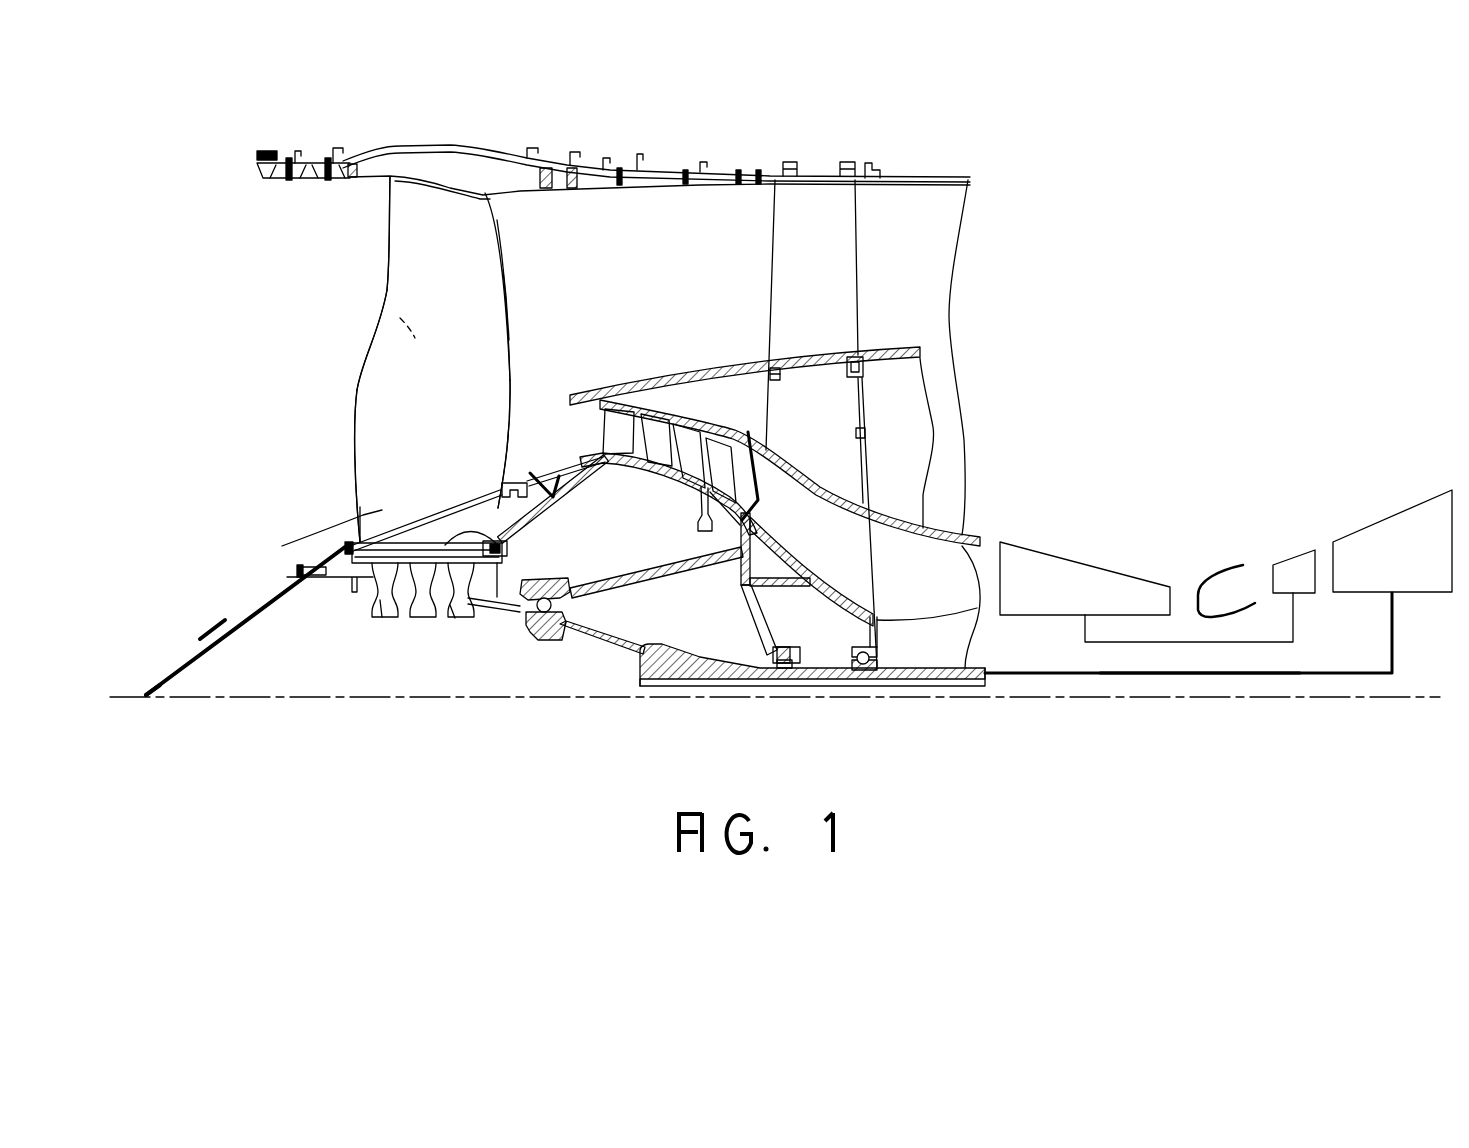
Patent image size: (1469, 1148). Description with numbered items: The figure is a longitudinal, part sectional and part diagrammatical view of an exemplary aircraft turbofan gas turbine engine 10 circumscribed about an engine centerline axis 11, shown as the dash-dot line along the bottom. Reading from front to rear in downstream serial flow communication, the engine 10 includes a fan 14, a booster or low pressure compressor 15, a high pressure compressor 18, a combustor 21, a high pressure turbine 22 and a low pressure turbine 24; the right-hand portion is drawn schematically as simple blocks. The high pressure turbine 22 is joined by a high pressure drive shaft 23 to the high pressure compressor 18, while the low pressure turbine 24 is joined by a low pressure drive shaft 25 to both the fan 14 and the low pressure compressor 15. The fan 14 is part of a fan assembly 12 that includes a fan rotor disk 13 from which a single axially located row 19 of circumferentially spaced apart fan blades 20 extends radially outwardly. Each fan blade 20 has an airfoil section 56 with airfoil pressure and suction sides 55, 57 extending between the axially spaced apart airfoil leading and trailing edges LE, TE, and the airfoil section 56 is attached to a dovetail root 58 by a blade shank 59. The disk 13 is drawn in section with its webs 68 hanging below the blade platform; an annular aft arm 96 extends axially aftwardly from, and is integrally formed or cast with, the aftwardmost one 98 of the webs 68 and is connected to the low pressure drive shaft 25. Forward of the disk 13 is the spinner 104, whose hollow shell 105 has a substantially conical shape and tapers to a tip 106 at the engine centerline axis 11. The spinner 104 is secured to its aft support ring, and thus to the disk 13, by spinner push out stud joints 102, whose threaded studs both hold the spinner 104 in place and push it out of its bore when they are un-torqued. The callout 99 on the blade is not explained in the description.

The aircraft turbofan gas turbine engine 10 is at (373, 726).
The engine centerline axis 11 is at (1062, 700).
The fan assembly 12 is at (316, 520).
The fan rotor disk 13 is at (437, 590).
The fan 14 is at (507, 307).
The low pressure compressor 15 is at (690, 376).
The high pressure compressor 18 is at (1058, 557).
The row of fan blades 19 is at (282, 546).
The fan blade 20 is at (455, 395).
The combustor 21 is at (1227, 568).
The high pressure turbine 22 is at (1292, 558).
The high pressure drive shaft 23 is at (1257, 642).
The low pressure turbine 24 is at (1407, 593).
The low pressure drive shaft 25 is at (1183, 677).
The airfoil pressure side 55 is at (400, 318).
The airfoil section 56 is at (457, 227).
The airfoil suction side 57 is at (390, 247).
The dovetail root 58 is at (510, 535).
The blade shank 59 is at (462, 520).
The webs of the disk 68 is at (385, 617).
The annular aft arm 96 is at (493, 607).
The aftwardmost web 98 is at (453, 620).
The blade root fillet 99 is at (412, 277).
The spinner push out stud joint 102 is at (303, 594).
The spinner 104 is at (213, 630).
The hollow shell 105 is at (230, 620).
The spinner tip 106 is at (146, 696).
The airfoil leading edge LE is at (362, 366).
The airfoil trailing edge TE is at (510, 343).